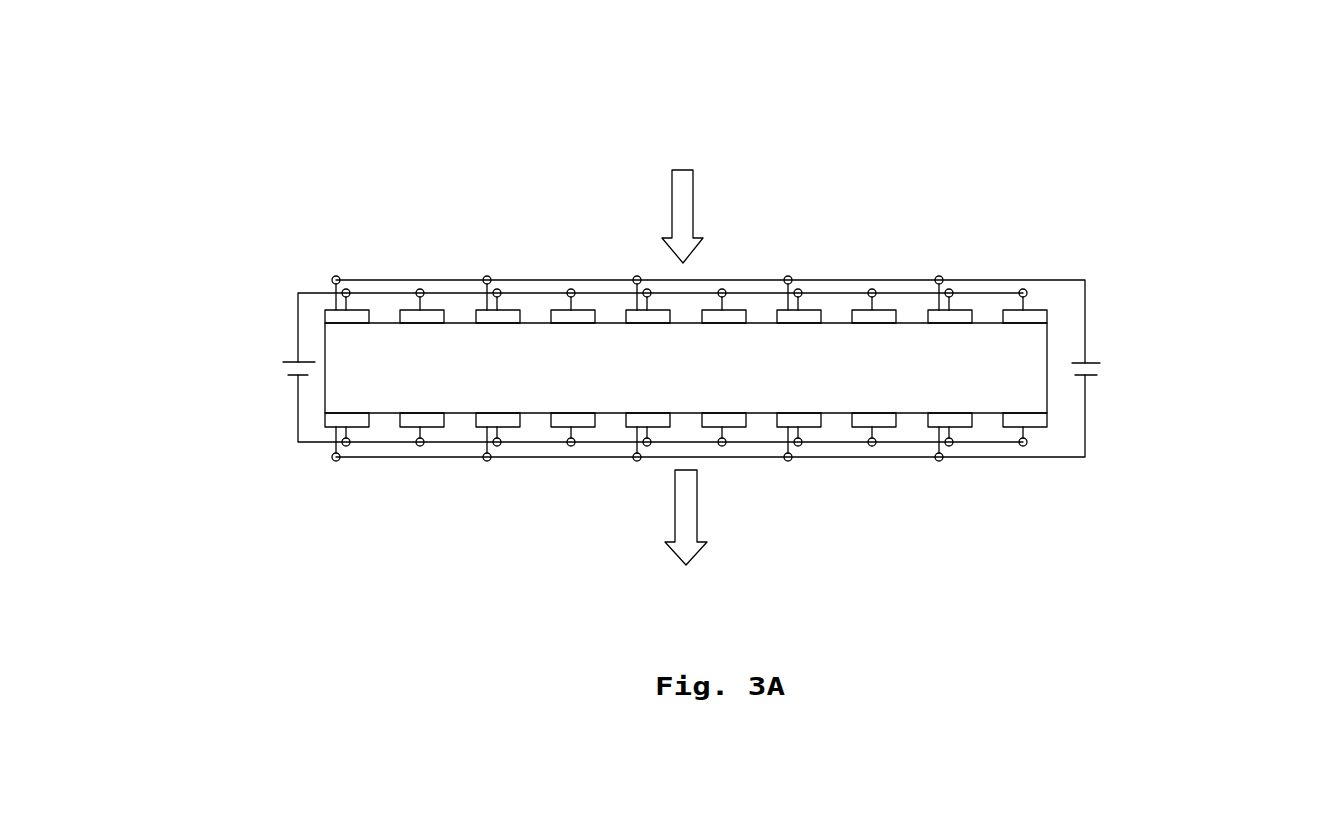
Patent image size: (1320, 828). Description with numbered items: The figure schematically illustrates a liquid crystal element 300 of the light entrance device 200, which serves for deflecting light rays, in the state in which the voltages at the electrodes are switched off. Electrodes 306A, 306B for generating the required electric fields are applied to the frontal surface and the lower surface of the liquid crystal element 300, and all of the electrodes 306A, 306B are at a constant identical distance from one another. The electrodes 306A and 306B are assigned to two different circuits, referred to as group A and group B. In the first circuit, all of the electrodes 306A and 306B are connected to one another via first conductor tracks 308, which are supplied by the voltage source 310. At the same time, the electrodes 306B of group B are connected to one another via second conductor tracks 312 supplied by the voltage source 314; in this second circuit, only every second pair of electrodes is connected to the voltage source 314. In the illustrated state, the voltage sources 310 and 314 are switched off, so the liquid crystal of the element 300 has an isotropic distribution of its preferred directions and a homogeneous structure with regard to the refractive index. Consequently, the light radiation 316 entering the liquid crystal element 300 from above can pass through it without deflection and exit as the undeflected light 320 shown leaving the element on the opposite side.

The light entrance device 200 is at (1057, 112).
The liquid crystal element 300 is at (1044, 390).
The electrodes of group A 306A is at (427, 318).
The electrodes of group B 306B is at (354, 318).
The first conductor tracks 308 is at (307, 293).
The voltage source 310 is at (288, 368).
The second conductor tracks 312 is at (1087, 297).
The voltage source 314 is at (1100, 370).
The light radiation 316 is at (693, 205).
The outgoing flow direction arrow 320 is at (697, 515).